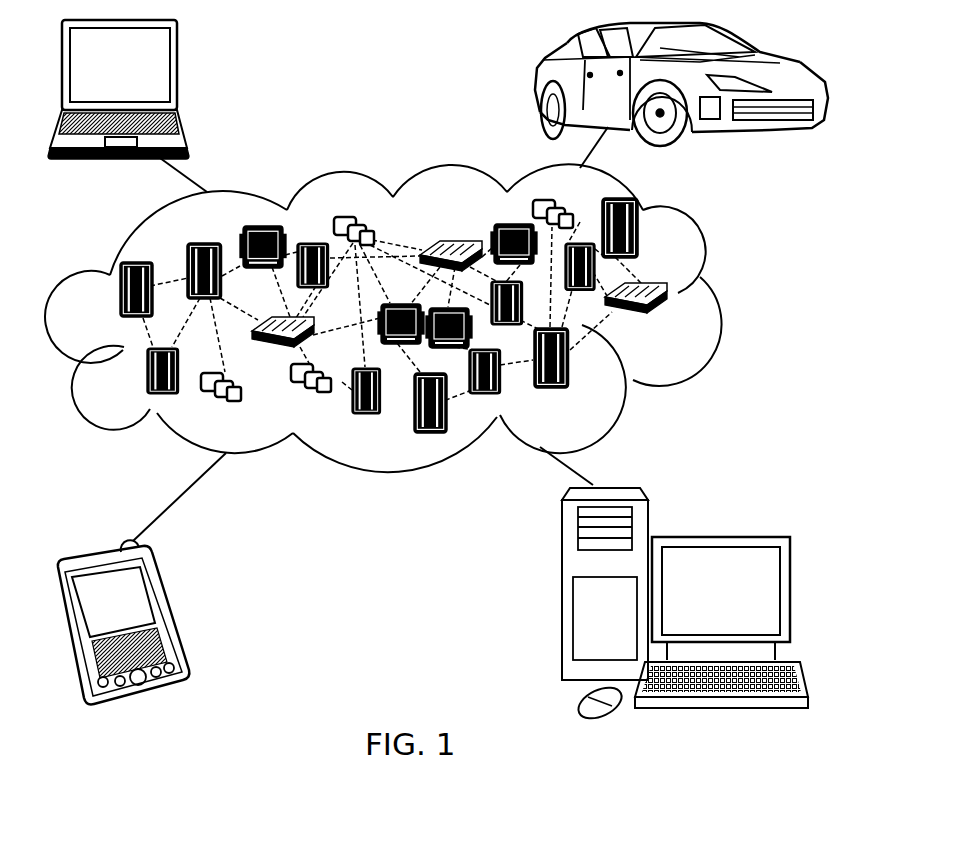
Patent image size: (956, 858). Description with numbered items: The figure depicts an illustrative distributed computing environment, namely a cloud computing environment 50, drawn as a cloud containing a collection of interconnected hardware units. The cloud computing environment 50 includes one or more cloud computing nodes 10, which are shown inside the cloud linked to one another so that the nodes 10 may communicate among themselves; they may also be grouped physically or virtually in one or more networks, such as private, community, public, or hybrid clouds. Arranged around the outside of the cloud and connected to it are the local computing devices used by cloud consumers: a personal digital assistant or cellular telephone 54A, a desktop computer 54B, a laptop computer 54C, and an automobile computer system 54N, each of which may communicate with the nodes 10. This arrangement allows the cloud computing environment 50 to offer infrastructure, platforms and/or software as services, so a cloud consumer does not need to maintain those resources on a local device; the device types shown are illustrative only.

The cloud computing nodes 10 is at (682, 326).
The cloud computing environment 50 is at (720, 290).
The personal digital assistant (PDA) or cellular telephone 54A is at (168, 612).
The desktop computer 54B is at (719, 536).
The laptop computer 54C is at (180, 73).
The automobile computer system 54N is at (545, 72).